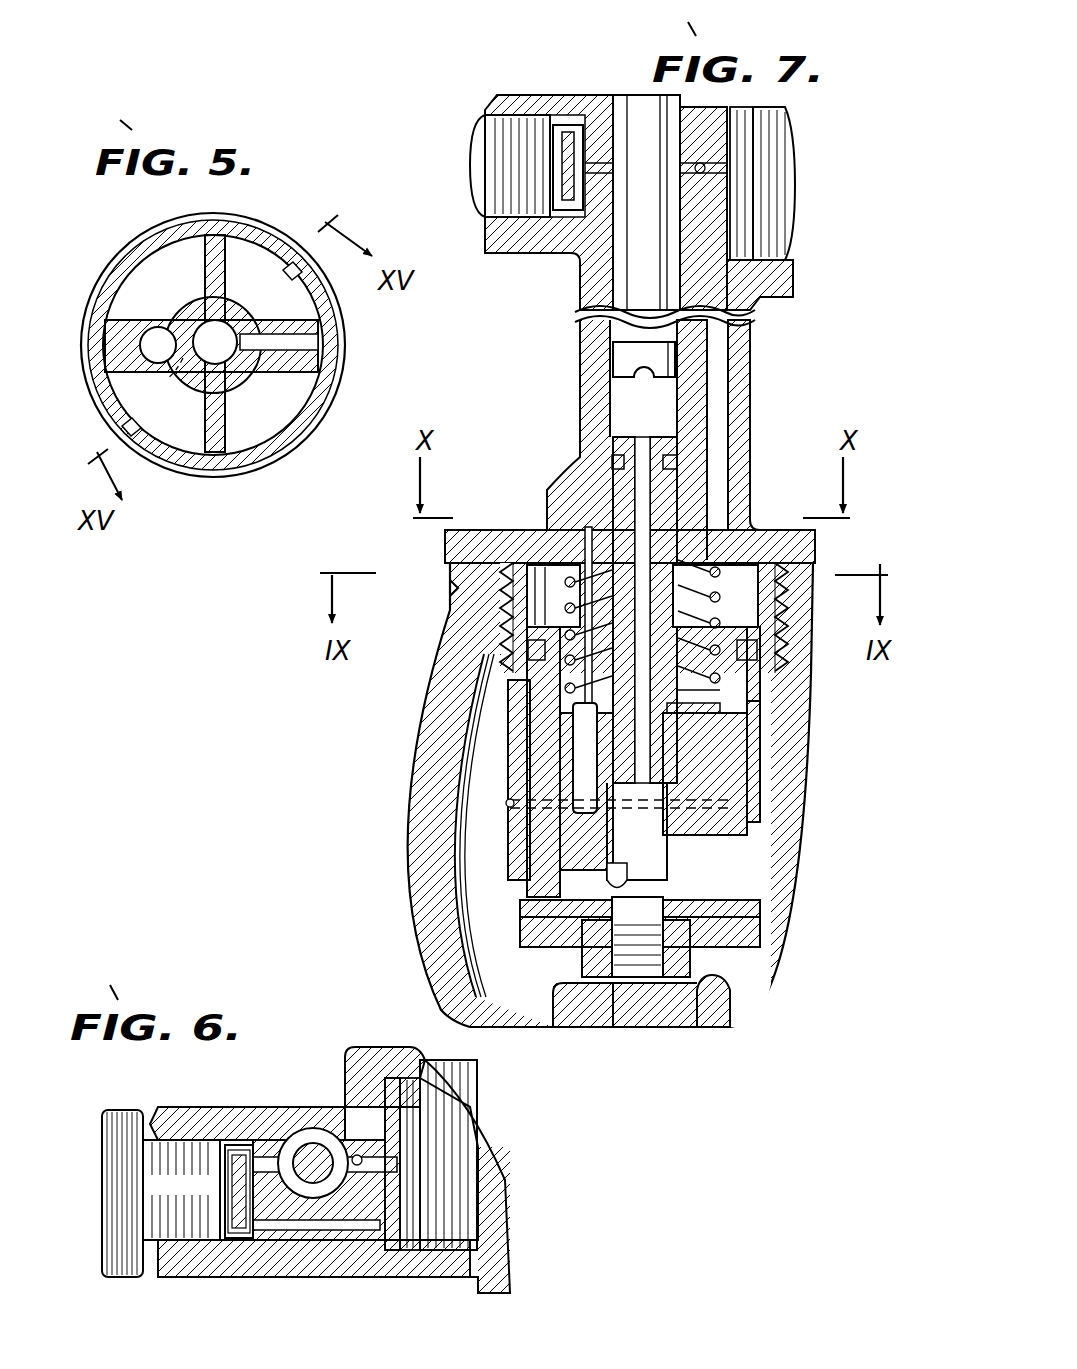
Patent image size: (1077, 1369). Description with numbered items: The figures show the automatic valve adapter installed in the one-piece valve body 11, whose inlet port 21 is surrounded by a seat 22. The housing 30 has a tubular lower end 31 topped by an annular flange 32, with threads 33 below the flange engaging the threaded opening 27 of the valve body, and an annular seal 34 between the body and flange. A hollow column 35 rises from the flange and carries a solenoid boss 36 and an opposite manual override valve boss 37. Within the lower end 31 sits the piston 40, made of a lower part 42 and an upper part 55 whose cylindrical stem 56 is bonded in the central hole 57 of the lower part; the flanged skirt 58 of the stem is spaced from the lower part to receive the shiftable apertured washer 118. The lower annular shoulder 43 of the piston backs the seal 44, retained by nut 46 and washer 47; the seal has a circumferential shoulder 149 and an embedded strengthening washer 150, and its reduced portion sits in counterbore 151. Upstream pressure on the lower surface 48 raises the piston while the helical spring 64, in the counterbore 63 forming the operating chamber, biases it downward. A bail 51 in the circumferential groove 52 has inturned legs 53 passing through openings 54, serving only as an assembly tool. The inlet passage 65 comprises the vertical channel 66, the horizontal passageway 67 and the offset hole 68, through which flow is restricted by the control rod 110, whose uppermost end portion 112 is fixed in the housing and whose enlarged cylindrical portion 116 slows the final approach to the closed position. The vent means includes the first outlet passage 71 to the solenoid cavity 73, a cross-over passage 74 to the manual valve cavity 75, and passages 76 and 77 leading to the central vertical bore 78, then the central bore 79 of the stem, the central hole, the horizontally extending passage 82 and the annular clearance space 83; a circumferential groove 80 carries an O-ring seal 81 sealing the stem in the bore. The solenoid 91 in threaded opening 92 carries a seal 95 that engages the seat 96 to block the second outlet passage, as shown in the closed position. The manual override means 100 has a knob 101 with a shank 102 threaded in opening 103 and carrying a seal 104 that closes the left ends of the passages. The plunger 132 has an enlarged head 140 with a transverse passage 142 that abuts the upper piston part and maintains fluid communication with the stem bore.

In FIG. 7, the valve body 11 is at (410, 862).
In FIG. 7, the inlet port 21 is at (650, 1005).
In FIG. 7, the seat 22 is at (720, 1005).
In FIG. 7, the threaded opening 27 is at (505, 642).
In FIG. 7, the housing 30 is at (755, 420).
In FIG. 5, the tubular lower end 31 is at (345, 372).
In FIG. 7, the tubular lower end 31 is at (508, 702).
In FIG. 7, the annular flange 32 is at (446, 540).
In FIG. 7, the threads 33 is at (805, 665).
In FIG. 7, the annular seal 34 is at (450, 580).
In FIG. 7, the hollow column 35 is at (752, 342).
In FIG. 6, the hollow column 35 is at (305, 1112).
In FIG. 6, the solenoid boss 36 is at (372, 1052).
In FIG. 7, the manual override valve boss 37 is at (530, 97).
In FIG. 6, the manual override valve boss 37 is at (165, 1106).
In FIG. 5, the piston 40 is at (255, 238).
In FIG. 7, the piston 40 is at (525, 682).
In FIG. 7, the lower part 42 is at (654, 791).
In FIG. 7, the lower annular shoulder 43 is at (616, 899).
In FIG. 7, the seal 44 is at (762, 932).
In FIG. 7, the nut 46 is at (692, 967).
In FIG. 7, the washer 47 is at (585, 952).
In FIG. 7, the lower surface 48 is at (760, 948).
In FIG. 5, the bail 51 is at (96, 426).
In FIG. 7, the bail 51 is at (504, 804).
In FIG. 5, the circumferential groove 52 is at (96, 378).
In FIG. 7, the circumferential groove 52 is at (772, 800).
In FIG. 5, the inturned legs 53 is at (300, 300).
In FIG. 5, the openings 54 is at (128, 440).
In FIG. 7, the upper part 55 is at (598, 483).
In FIG. 7, the cylindrical stem 56 is at (660, 513).
In FIG. 5, the central hole 57 is at (220, 328).
In FIG. 7, the central hole 57 is at (660, 812).
In FIG. 7, the flanged skirt 58 is at (722, 692).
In FIG. 7, the counterbore 63 is at (720, 620).
In FIG. 7, the helical spring 64 is at (565, 604).
In FIG. 7, the inlet passage 65 is at (620, 1000).
In FIG. 7, the vertical channel 66 is at (622, 878).
In FIG. 5, the horizontal passageway 67 is at (172, 380).
In FIG. 7, the horizontal passageway 67 is at (610, 878).
In FIG. 5, the hole 68 is at (158, 330).
In FIG. 7, the hole 68 is at (572, 838).
In FIG. 7, the first outlet passage 71 is at (718, 372).
In FIG. 7, the solenoid cavity 73 is at (762, 290).
In FIG. 6, the solenoid cavity 73 is at (398, 1242).
In FIG. 6, the cross-over passage 74 is at (358, 1232).
In FIG. 7, the manual valve cavity 75 is at (565, 210).
In FIG. 6, the manual valve cavity 75 is at (236, 1240).
In FIG. 7, the second outlet passage 76 is at (700, 160).
In FIG. 6, the second outlet passage 76 is at (355, 1155).
In FIG. 7, the passage 77 is at (610, 170).
In FIG. 6, the passage 77 is at (272, 1158).
In FIG. 7, the central vertical bore 78 is at (600, 290).
In FIG. 6, the central vertical bore 78 is at (318, 1192).
In FIG. 7, the central bore 79 is at (648, 483).
In FIG. 7, the circumferential groove 80 is at (612, 462).
In FIG. 7, the O-ring seal 81 is at (678, 462).
In FIG. 5, the horizontally extending passage 82 is at (318, 342).
In FIG. 7, the horizontally extending passage 82 is at (742, 852).
In FIG. 5, the annular clearance space 83 is at (322, 402).
In FIG. 7, the annular clearance space 83 is at (762, 770).
In FIG. 6, the solenoid 91 is at (495, 1240).
In FIG. 7, the threaded opening 92 is at (790, 240).
In FIG. 6, the threaded opening 92 is at (448, 1250).
In FIG. 7, the seal 95 is at (745, 132).
In FIG. 6, the seal 95 is at (412, 1105).
In FIG. 7, the seat 96 is at (730, 108).
In FIG. 6, the manual override means 100 is at (84, 1171).
In FIG. 6, the knob 101 is at (110, 1250).
In FIG. 7, the shank 102 is at (486, 122).
In FIG. 6, the shank 102 is at (178, 1278).
In FIG. 7, the opening 103 is at (503, 208).
In FIG. 6, the opening 103 is at (186, 1146).
In FIG. 7, the seal 104 is at (575, 126).
In FIG. 6, the seal 104 is at (230, 1148).
In FIG. 7, the control rod 110 is at (575, 740).
In FIG. 7, the uppermost end portion 112 is at (588, 527).
In FIG. 7, the cylindrical portion 116 is at (578, 775).
In FIG. 7, the washer 118 is at (722, 708).
In FIG. 7, the plunger 132 is at (590, 312).
In FIG. 6, the plunger 132 is at (298, 1200).
In FIG. 7, the head 140 is at (620, 357).
In FIG. 7, the transverse passage 142 is at (640, 380).
In FIG. 7, the circumferential shoulder 149 is at (760, 897).
In FIG. 7, the strengthening washer 150 is at (468, 915).
In FIG. 7, the counterbore 151 is at (762, 915).